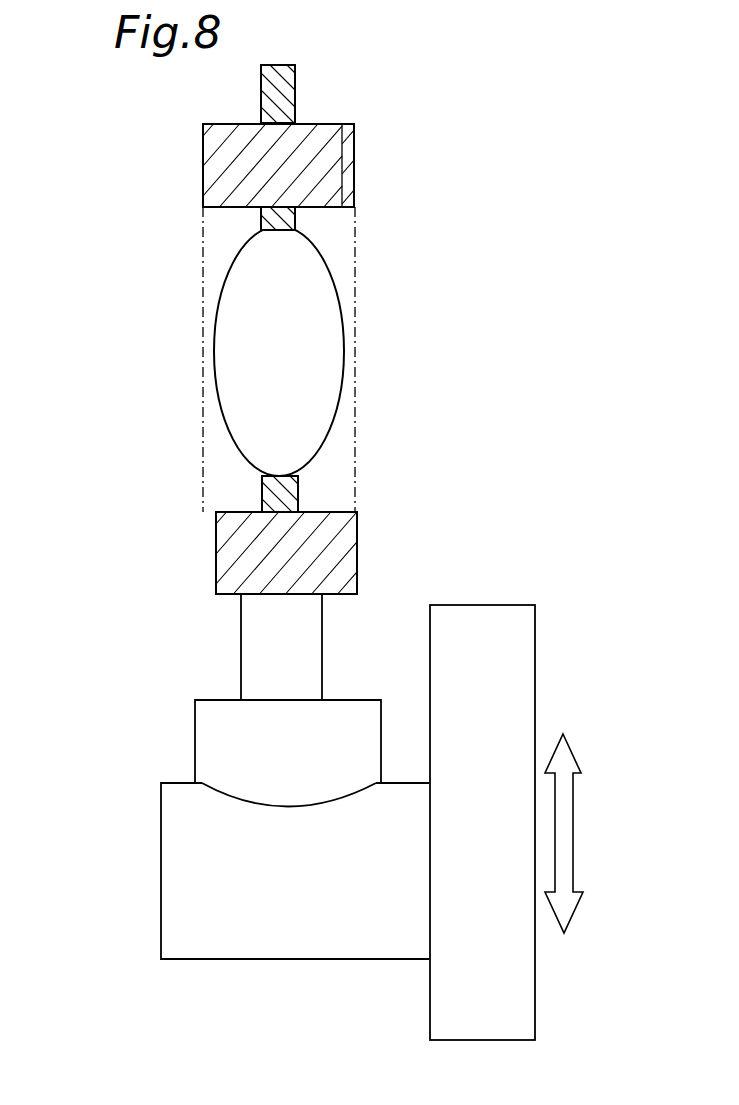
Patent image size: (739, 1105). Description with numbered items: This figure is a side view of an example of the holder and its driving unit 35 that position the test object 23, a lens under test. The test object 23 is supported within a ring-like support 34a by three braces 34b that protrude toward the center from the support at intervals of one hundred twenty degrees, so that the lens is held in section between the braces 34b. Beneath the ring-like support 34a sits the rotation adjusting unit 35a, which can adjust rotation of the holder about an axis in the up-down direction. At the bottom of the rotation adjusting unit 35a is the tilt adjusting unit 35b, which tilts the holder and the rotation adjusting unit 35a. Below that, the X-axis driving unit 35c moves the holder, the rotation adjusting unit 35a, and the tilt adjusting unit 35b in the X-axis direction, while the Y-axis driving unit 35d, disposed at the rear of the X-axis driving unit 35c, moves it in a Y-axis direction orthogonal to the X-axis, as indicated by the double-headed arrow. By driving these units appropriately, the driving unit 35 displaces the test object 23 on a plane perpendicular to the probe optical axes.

The test object 23 is at (270, 310).
The ring-like support 34a is at (203, 167).
The brace 34b is at (285, 88).
The driving unit 35 is at (410, 581).
The rotation adjusting unit 35a is at (257, 624).
The tilt adjusting unit 35b is at (205, 730).
The X-axis driving unit 35c is at (177, 848).
The Y-axis driving unit 35d is at (536, 669).